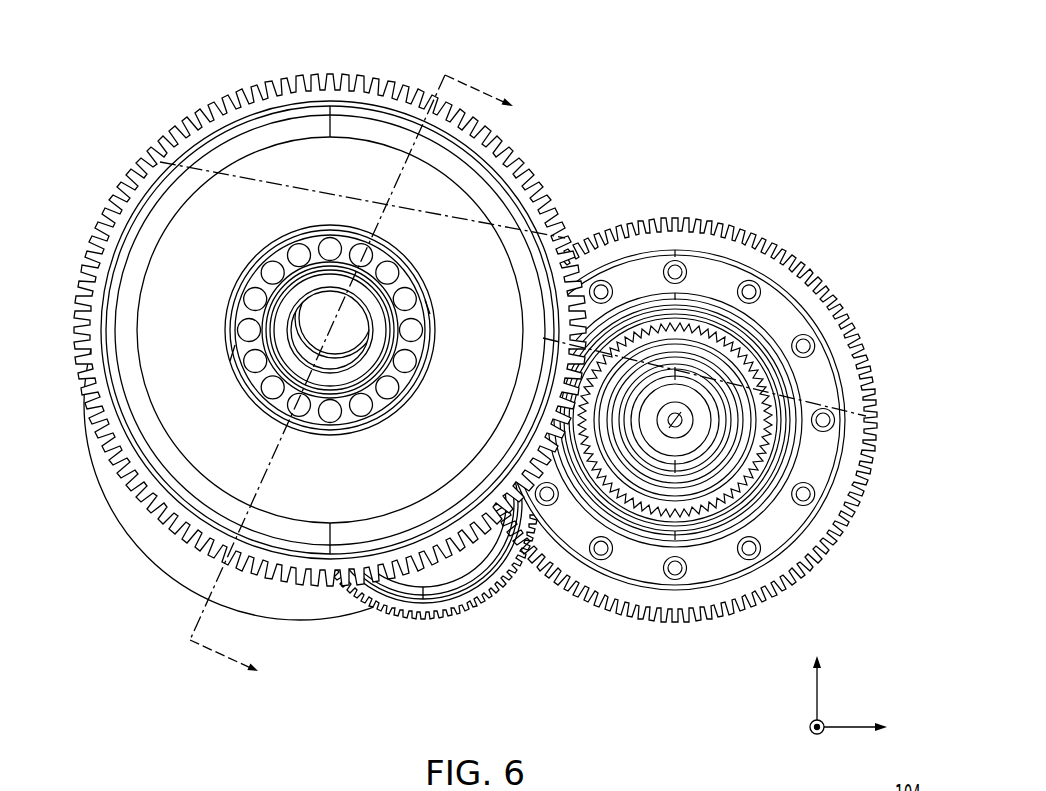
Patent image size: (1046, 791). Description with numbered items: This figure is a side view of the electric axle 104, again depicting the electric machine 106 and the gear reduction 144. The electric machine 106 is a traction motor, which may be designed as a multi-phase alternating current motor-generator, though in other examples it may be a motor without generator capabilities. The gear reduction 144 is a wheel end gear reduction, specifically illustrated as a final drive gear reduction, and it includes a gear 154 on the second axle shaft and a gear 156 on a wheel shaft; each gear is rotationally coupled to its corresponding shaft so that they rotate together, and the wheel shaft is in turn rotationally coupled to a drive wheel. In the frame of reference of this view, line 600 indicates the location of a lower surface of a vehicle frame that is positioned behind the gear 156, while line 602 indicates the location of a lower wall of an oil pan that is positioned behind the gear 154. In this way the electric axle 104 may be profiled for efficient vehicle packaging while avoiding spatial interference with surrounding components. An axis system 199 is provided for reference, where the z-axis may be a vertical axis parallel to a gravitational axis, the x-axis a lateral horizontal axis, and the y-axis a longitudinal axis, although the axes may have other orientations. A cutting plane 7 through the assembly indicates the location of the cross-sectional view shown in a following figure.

The electric axle 104 is at (163, 66).
The electric machine 106 is at (168, 550).
The wheel end gear reduction 144 is at (552, 482).
The gear 154 is at (803, 546).
The gear 156 is at (150, 242).
The axis system 199 is at (870, 683).
The line 600 is at (167, 163).
The line 602 is at (862, 414).
The cutting plane 7-7' 7 is at (360, 383).